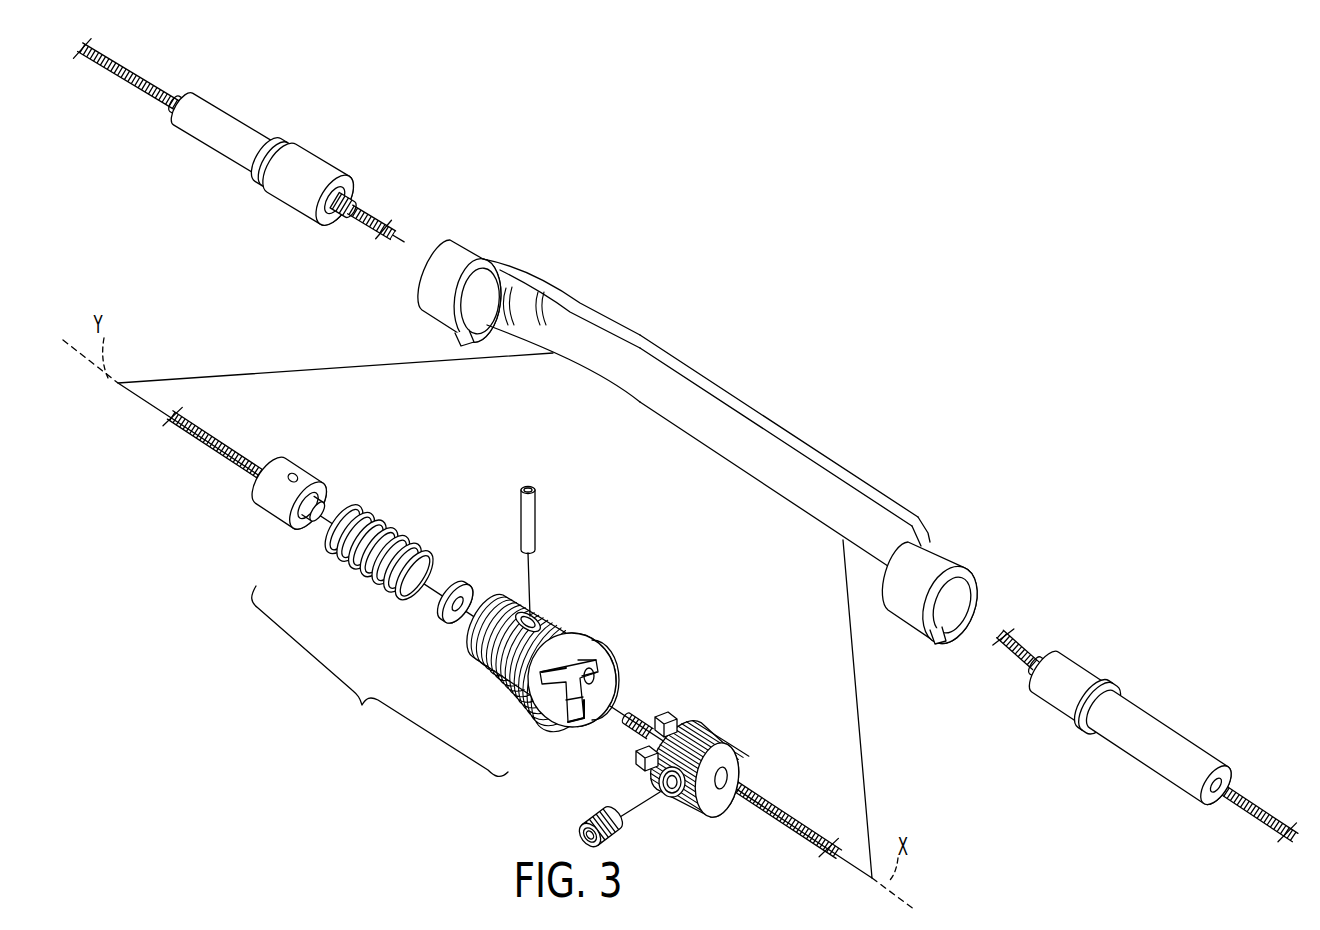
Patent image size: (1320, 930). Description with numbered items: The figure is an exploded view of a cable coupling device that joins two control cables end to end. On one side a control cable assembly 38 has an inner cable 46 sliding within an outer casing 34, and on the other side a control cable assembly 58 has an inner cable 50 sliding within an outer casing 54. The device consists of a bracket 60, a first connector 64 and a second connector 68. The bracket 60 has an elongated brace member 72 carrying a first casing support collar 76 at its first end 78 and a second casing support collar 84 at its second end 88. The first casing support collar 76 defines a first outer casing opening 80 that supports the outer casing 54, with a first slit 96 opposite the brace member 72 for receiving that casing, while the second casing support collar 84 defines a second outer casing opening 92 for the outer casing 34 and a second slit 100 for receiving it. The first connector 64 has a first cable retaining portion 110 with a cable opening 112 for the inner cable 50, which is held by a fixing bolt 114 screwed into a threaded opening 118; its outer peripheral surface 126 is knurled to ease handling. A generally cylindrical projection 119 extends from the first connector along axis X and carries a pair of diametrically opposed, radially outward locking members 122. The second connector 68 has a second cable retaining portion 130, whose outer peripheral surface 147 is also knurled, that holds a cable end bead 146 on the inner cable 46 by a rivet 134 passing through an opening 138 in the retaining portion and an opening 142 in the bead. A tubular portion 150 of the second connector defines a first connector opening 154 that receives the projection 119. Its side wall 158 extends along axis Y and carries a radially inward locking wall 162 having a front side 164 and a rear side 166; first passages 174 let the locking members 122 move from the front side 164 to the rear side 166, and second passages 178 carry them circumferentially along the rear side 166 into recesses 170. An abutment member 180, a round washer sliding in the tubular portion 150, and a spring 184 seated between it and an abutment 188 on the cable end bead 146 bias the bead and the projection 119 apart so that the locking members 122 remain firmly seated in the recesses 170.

The outer casing 34 is at (223, 146).
The control cable assembly 38 is at (289, 158).
The inner cable 46 is at (176, 264).
The inner cable 50 is at (1011, 744).
The outer casing 54 is at (1158, 752).
The control cable assembly 58 is at (1126, 729).
The bracket 60 is at (710, 445).
The first connector 64 is at (682, 739).
The second connector 68 is at (376, 597).
The elongated brace member 72 is at (779, 446).
The first casing support collar 76 is at (941, 598).
The first end 78 is at (923, 502).
The first outer casing opening 80 is at (963, 595).
The second casing support collar 84 is at (466, 302).
The second end 88 is at (561, 308).
The second outer casing opening 92 is at (485, 279).
The first slit 96 is at (928, 660).
The second slit 100 is at (449, 368).
The first cable retaining portion 110 is at (706, 754).
The cable opening 112 is at (722, 809).
The fixing bolt 114 is at (615, 809).
The threaded opening 118 is at (666, 810).
The cylindrical projection 119 is at (659, 682).
The locking members 122 is at (666, 733).
The outer peripheral surface 126 is at (702, 744).
The second cable retaining portion 130 is at (531, 664).
The rivet 134 is at (555, 546).
The opening 138 is at (536, 601).
The opening 142 is at (303, 451).
The cable end bead 146 is at (296, 492).
The outer peripheral surface 147 is at (523, 639).
The tubular portion 150 is at (571, 673).
The first connector opening 154 is at (621, 651).
The side wall 158 is at (628, 649).
The locking wall 162 is at (549, 726).
The front side 164 is at (564, 750).
The rear side 166 is at (538, 691).
The recesses 170 is at (620, 687).
The first passages 174 is at (599, 736).
The second passages 178 is at (571, 618).
The abutment member 180 is at (440, 611).
The spring 184 is at (379, 541).
The abutment 188 is at (320, 482).